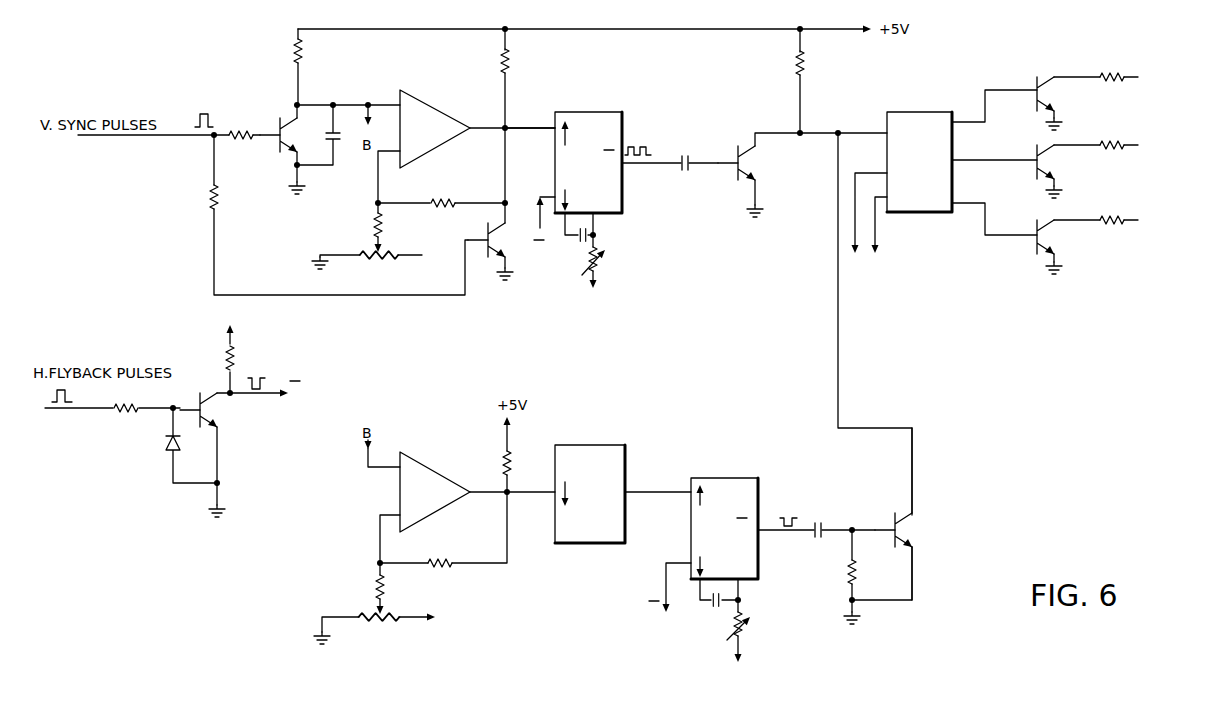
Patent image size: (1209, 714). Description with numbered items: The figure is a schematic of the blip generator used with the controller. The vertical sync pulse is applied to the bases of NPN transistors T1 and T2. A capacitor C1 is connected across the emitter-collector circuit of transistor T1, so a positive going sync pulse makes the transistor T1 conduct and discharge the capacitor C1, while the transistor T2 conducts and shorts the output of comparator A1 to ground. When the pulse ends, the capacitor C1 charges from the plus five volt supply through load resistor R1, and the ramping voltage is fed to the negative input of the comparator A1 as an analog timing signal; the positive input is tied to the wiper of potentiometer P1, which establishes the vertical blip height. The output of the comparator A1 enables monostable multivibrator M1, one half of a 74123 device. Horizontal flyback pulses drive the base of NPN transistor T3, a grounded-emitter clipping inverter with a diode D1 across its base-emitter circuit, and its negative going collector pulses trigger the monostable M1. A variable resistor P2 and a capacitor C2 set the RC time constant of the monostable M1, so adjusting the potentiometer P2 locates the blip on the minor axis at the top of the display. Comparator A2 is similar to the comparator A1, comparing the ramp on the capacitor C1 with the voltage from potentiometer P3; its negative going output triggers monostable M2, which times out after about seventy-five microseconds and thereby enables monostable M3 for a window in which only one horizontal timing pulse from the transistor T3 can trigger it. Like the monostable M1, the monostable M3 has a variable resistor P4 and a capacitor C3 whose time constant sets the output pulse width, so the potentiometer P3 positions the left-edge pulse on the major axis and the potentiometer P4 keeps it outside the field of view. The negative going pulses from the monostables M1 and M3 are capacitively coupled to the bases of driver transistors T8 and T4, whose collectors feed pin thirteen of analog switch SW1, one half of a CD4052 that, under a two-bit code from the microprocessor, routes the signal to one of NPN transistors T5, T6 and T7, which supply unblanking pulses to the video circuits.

The load resistor R1 is at (311, 67).
The capacitor C1 is at (318, 135).
The NPN transistor T1 is at (282, 145).
The comparator A1 is at (477, 129).
The potentiometer P1 is at (384, 236).
The NPN transistor T2 is at (487, 241).
The monostable multivibrator M1 is at (597, 175).
The capacitor C2 is at (572, 246).
The variable resistor P2 is at (605, 272).
The NPN transistor T8 is at (759, 169).
The analog switch SW1 is at (941, 186).
The NPN transistor T5 is at (1092, 100).
The NPN transistor T6 is at (1102, 168).
The NPN transistor T7 is at (1096, 244).
The NPN transistor T3 is at (240, 417).
The diode D1 is at (180, 445).
The comparator A2 is at (477, 492).
The potentiometer P3 is at (392, 603).
The monostable M2 is at (615, 486).
The monostable M3 is at (737, 538).
The capacitor C3 is at (706, 611).
The variable resistor P4 is at (746, 646).
The NPN transistor T4 is at (905, 514).